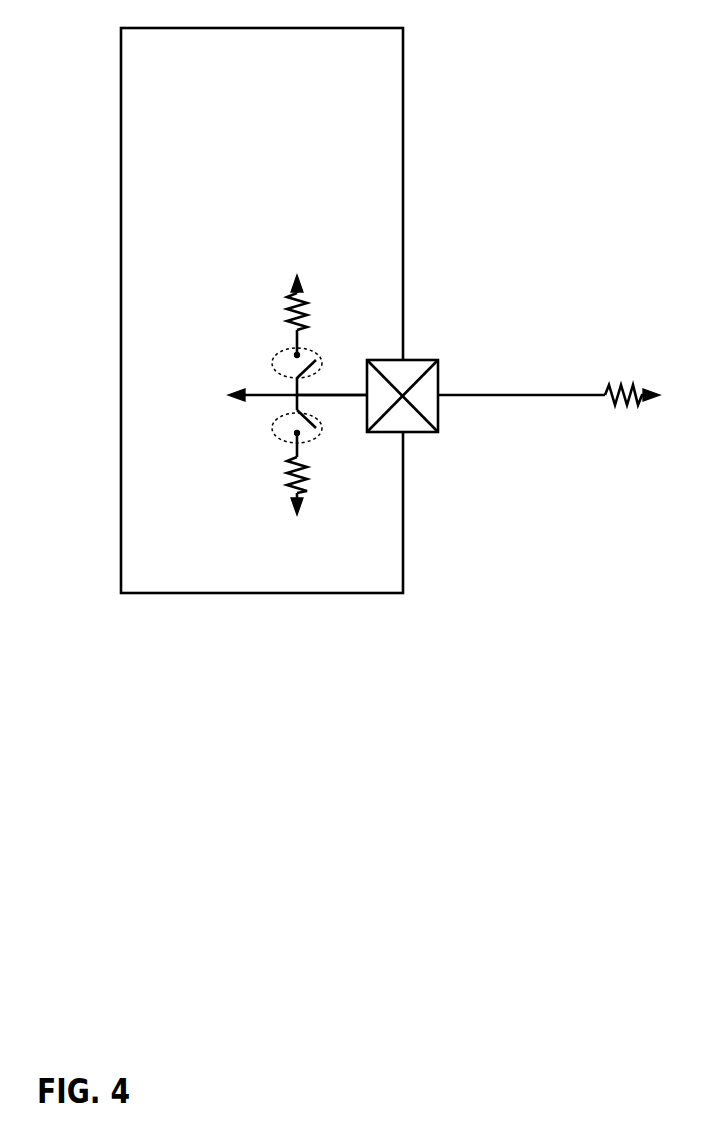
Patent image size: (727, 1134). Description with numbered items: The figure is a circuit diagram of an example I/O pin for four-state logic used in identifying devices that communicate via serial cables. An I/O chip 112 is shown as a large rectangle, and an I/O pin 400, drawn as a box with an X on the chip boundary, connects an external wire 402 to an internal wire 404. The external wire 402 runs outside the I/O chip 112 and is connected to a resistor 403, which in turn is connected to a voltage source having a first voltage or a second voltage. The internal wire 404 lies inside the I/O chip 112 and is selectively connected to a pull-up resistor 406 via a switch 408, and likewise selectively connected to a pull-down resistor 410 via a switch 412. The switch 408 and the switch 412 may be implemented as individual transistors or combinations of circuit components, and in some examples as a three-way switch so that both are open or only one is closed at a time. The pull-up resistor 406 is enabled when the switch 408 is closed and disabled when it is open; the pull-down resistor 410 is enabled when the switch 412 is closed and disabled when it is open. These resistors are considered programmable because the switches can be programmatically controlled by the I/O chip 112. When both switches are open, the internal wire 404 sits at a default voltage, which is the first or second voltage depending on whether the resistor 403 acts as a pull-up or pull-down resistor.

The I/O chip 112 is at (242, 88).
The I/O pin 400 is at (420, 358).
The external wire 402 is at (510, 395).
The resistor 403 is at (623, 378).
The internal wire 404 is at (340, 395).
The pull-up resistor 406 is at (285, 318).
The switch 408 is at (272, 360).
The pull-down resistor 410 is at (285, 475).
The switch 412 is at (273, 423).